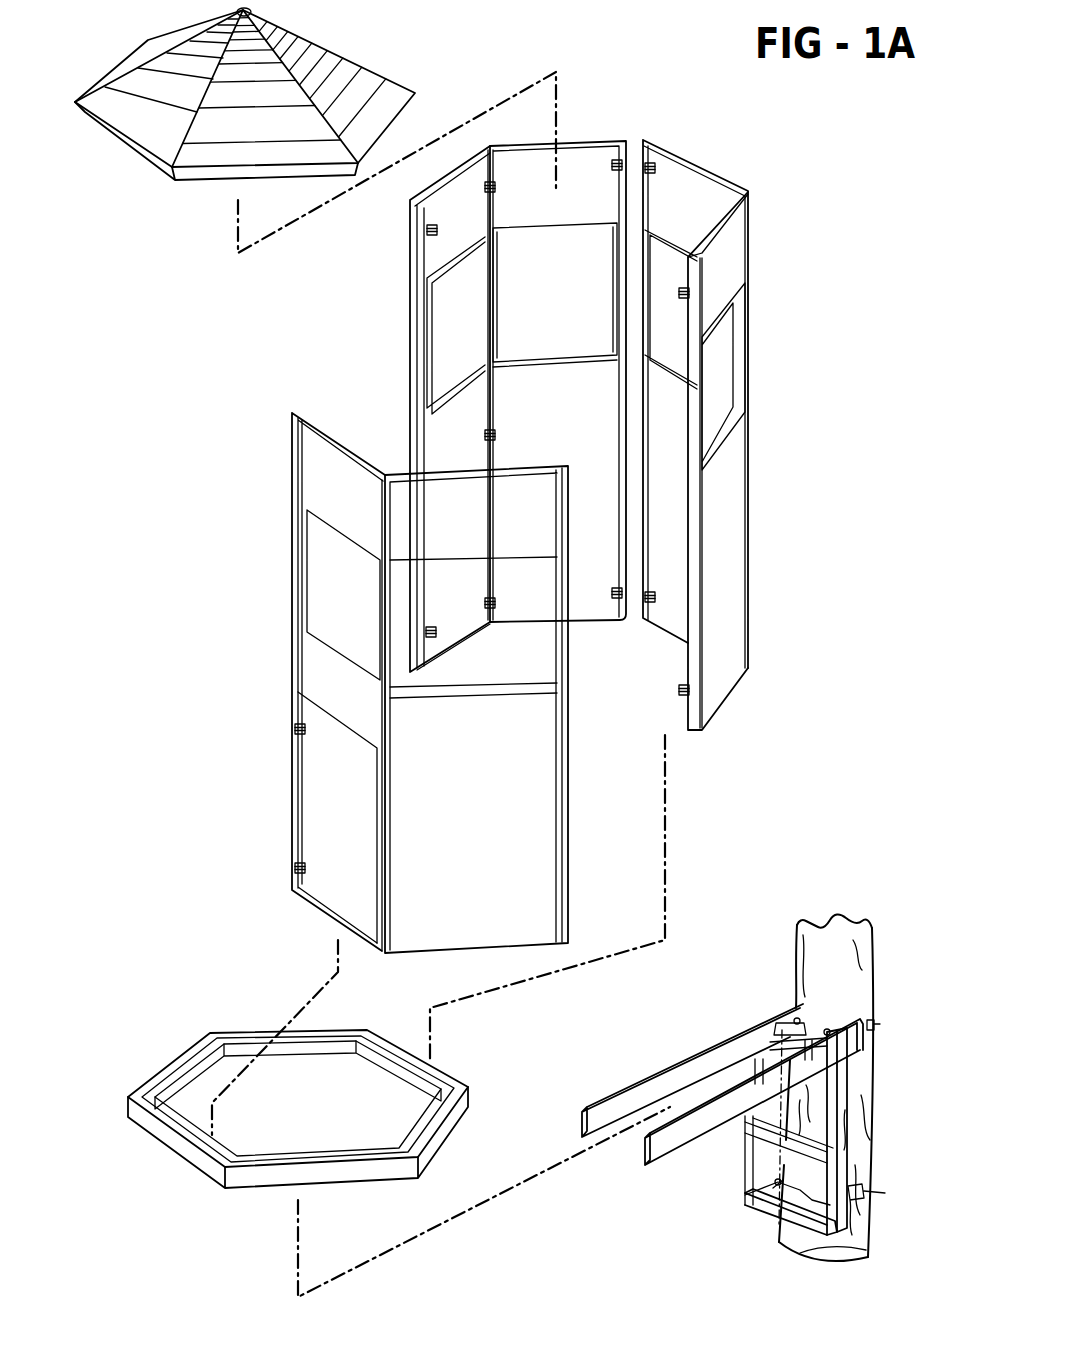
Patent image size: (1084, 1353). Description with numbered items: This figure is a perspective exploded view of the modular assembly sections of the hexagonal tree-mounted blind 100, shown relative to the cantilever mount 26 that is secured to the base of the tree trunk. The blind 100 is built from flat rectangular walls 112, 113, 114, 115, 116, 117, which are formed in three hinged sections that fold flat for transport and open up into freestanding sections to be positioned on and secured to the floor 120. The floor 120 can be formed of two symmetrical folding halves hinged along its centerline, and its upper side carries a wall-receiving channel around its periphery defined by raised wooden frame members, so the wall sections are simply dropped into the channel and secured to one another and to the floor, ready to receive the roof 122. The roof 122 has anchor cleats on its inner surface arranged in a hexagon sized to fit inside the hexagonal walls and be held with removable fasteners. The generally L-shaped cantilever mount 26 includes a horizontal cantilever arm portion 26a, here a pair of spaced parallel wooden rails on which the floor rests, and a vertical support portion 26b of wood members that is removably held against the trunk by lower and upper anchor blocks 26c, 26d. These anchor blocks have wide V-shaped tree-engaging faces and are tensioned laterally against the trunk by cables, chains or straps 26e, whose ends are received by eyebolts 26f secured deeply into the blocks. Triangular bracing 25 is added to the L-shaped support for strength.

The tree-mounted blind 100 is at (852, 244).
The flat rectangular wall 112 is at (307, 462).
The flat rectangular wall 113 is at (493, 795).
The flat rectangular wall 114 is at (738, 604).
The flat rectangular wall 115 is at (683, 192).
The flat rectangular wall 116 is at (590, 157).
The flat rectangular wall 117 is at (458, 203).
The floor 120 is at (207, 1092).
The roof 122 is at (357, 70).
The triangular bracing 25 is at (800, 1142).
The cantilever mount 26 is at (677, 1185).
The horizontal cantilever arm portion 26a is at (713, 1120).
The vertical support portion 26b is at (837, 1103).
The lower anchor block 26c is at (805, 1208).
The upper anchor block 26d is at (850, 1047).
The cables, chains, or straps 26e is at (870, 1027).
The eyebolts 26f is at (783, 1012).